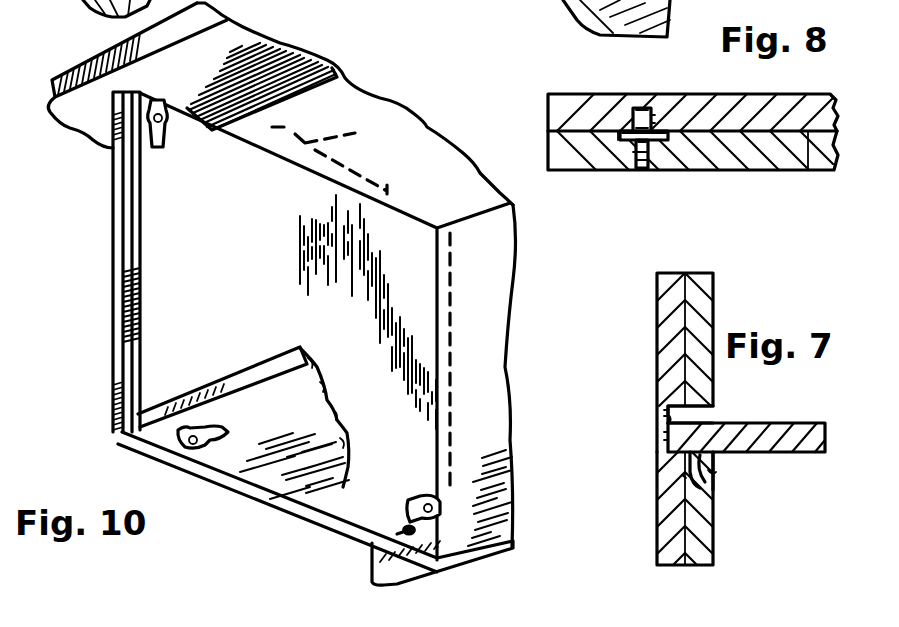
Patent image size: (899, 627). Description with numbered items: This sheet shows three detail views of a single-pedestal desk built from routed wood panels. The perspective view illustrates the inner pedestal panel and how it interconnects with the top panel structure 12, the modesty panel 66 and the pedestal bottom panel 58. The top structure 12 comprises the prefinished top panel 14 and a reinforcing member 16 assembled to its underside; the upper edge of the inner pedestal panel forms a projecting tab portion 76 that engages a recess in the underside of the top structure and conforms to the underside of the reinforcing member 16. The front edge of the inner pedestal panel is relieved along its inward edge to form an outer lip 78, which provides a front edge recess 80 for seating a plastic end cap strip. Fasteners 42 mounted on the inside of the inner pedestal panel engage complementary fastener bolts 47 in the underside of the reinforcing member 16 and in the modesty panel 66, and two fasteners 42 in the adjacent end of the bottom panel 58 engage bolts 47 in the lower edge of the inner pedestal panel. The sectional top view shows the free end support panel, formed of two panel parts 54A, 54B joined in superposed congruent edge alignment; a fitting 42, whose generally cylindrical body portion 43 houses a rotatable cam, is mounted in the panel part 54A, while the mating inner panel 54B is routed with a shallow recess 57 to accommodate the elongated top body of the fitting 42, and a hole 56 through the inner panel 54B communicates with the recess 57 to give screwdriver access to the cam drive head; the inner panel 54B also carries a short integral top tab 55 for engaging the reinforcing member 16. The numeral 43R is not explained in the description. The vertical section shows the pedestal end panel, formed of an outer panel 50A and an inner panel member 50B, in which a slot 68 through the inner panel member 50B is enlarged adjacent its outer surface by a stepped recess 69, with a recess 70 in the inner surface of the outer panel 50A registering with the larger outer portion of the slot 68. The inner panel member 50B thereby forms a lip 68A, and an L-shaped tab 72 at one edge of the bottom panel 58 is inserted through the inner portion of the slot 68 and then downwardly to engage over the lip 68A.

In FIG. 10, the top panel structure 12 is at (283, 43).
In FIG. 10, the top panel 14 is at (427, 127).
In FIG. 10, the reinforcing member 16 is at (327, 60).
In FIG. 10, the fitting 42 is at (165, 147).
In FIG. 8, the fitting 42 is at (650, 128).
In FIG. 8, the body portion 43 is at (637, 108).
In FIG. 8, the fastener rim 43R is at (652, 123).
In FIG. 10, the mounting bolt 47 is at (405, 527).
In FIG. 7, the outer panel 50A is at (657, 290).
In FIG. 7, the inner panel member 50B is at (713, 287).
In FIG. 8, the panel part 54A is at (562, 92).
In FIG. 8, the inner panel 54B is at (817, 157).
In FIG. 8, the top tab 55 is at (673, 168).
In FIG. 8, the hole 56 is at (643, 173).
In FIG. 8, the shallow recess 57 is at (610, 167).
In FIG. 10, the pedestal bottom panel 58 is at (267, 362).
In FIG. 7, the pedestal bottom panel 58 is at (785, 423).
In FIG. 10, the modesty panel 66 is at (505, 367).
In FIG. 7, the slot 68 is at (707, 413).
In FIG. 7, the lip 68A is at (710, 467).
In FIG. 7, the stepped recess 69 is at (682, 475).
In FIG. 7, the recess 70 is at (667, 415).
In FIG. 7, the tab 72 is at (667, 437).
In FIG. 10, the tab portion 76 is at (329, 158).
In FIG. 10, the outer lip 78 is at (120, 348).
In FIG. 10, the front edge recess 80 is at (120, 447).